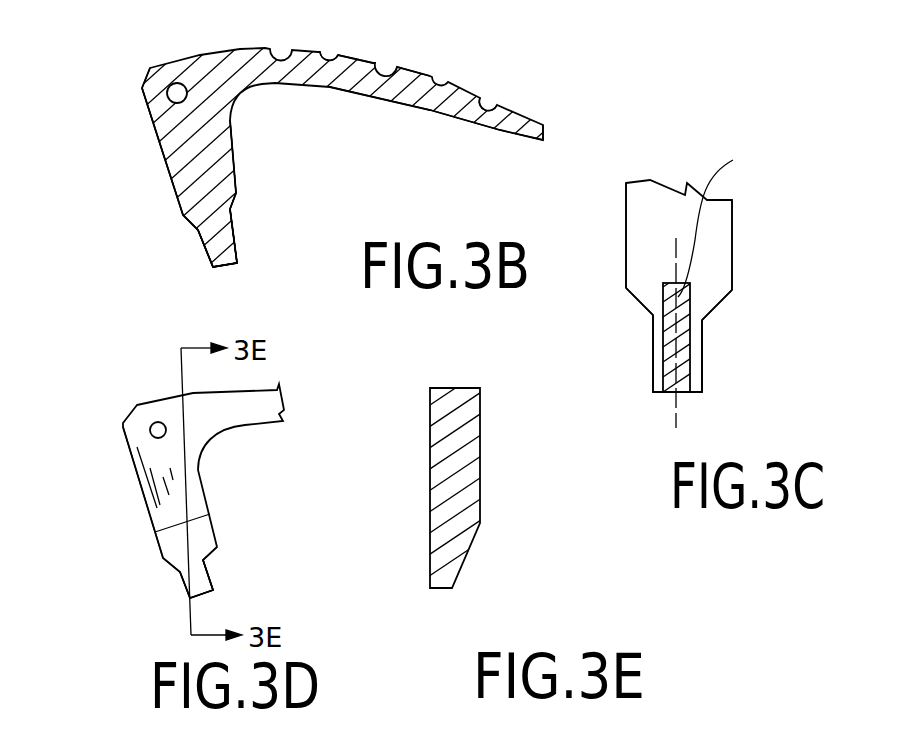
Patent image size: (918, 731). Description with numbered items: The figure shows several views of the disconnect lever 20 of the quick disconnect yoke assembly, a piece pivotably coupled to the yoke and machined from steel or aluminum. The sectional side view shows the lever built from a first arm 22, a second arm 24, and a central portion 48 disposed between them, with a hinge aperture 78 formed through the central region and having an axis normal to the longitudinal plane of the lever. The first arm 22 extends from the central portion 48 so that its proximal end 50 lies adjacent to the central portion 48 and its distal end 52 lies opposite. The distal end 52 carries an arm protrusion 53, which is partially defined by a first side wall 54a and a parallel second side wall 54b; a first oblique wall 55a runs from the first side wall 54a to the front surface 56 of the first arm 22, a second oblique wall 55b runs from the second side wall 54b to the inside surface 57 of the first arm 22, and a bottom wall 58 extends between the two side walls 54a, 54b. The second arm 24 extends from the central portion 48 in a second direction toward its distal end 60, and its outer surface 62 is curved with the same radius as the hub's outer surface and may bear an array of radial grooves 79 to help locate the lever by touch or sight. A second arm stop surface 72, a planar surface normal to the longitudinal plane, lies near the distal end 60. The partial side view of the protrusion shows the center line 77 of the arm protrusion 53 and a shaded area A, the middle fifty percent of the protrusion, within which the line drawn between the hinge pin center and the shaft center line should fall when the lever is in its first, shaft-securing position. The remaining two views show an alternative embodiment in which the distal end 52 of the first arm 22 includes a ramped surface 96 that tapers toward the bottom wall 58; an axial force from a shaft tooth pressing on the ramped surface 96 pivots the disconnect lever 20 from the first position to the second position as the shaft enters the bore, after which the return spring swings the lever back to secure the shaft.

In FIG. 3B, the disconnect lever 20 is at (525, 90).
In FIG. 3B, the first arm 22 is at (103, 201).
In FIG. 3C, the first arm 22 is at (752, 219).
In FIG. 3D, the first arm 22 is at (120, 519).
In FIG. 3B, the second arm 24 is at (433, 52).
In FIG. 3B, the central portion 48 is at (138, 63).
In FIG. 3B, the proximal end 50 is at (130, 116).
In FIG. 3B, the distal end 52 is at (258, 232).
In FIG. 3D, the distal end 52 is at (152, 592).
In FIG. 3B, the arm protrusion 53 is at (188, 244).
In FIG. 3C, the arm protrusion 53 is at (742, 376).
In FIG. 3D, the arm protrusion 53 is at (158, 568).
In FIG. 3B, the first side wall 54a is at (213, 265).
In FIG. 3C, the first side wall 54a is at (653, 358).
In FIG. 3B, the second side wall 54b is at (239, 251).
In FIG. 3C, the second side wall 54b is at (702, 350).
In FIG. 3D, the second side wall 54b is at (212, 578).
In FIG. 3B, the first oblique wall 55a is at (196, 231).
In FIG. 3C, the first oblique wall 55a is at (640, 300).
In FIG. 3B, the second oblique wall 55b is at (235, 210).
In FIG. 3C, the second oblique wall 55b is at (720, 303).
In FIG. 3B, the front surface 56 is at (163, 155).
In FIG. 3C, the front surface 56 is at (626, 230).
In FIG. 3D, the front surface 56 is at (142, 493).
In FIG. 3B, the inside surface 57 is at (234, 170).
In FIG. 3C, the inside surface 57 is at (732, 263).
In FIG. 3B, the bottom wall 58 is at (235, 268).
In FIG. 3C, the bottom wall 58 is at (694, 394).
In FIG. 3D, the bottom wall 58 is at (203, 594).
In FIG. 3E, the bottom wall 58 is at (430, 590).
In FIG. 3B, the distal end 60 is at (458, 138).
In FIG. 3B, the outer surface 62 is at (357, 56).
In FIG. 3B, the second arm stop surface 72 is at (530, 143).
In FIG. 3C, the center line 77 is at (676, 420).
In FIG. 3B, the hinge aperture 78 is at (177, 83).
In FIG. 3B, the radial grooves 79 is at (327, 56).
In FIG. 3C, the ramped surface 96 is at (677, 330).
In FIG. 3D, the ramped surface 96 is at (200, 540).
In FIG. 3E, the ramped surface 96 is at (467, 553).
In FIG. 3C, the area A is at (717, 222).